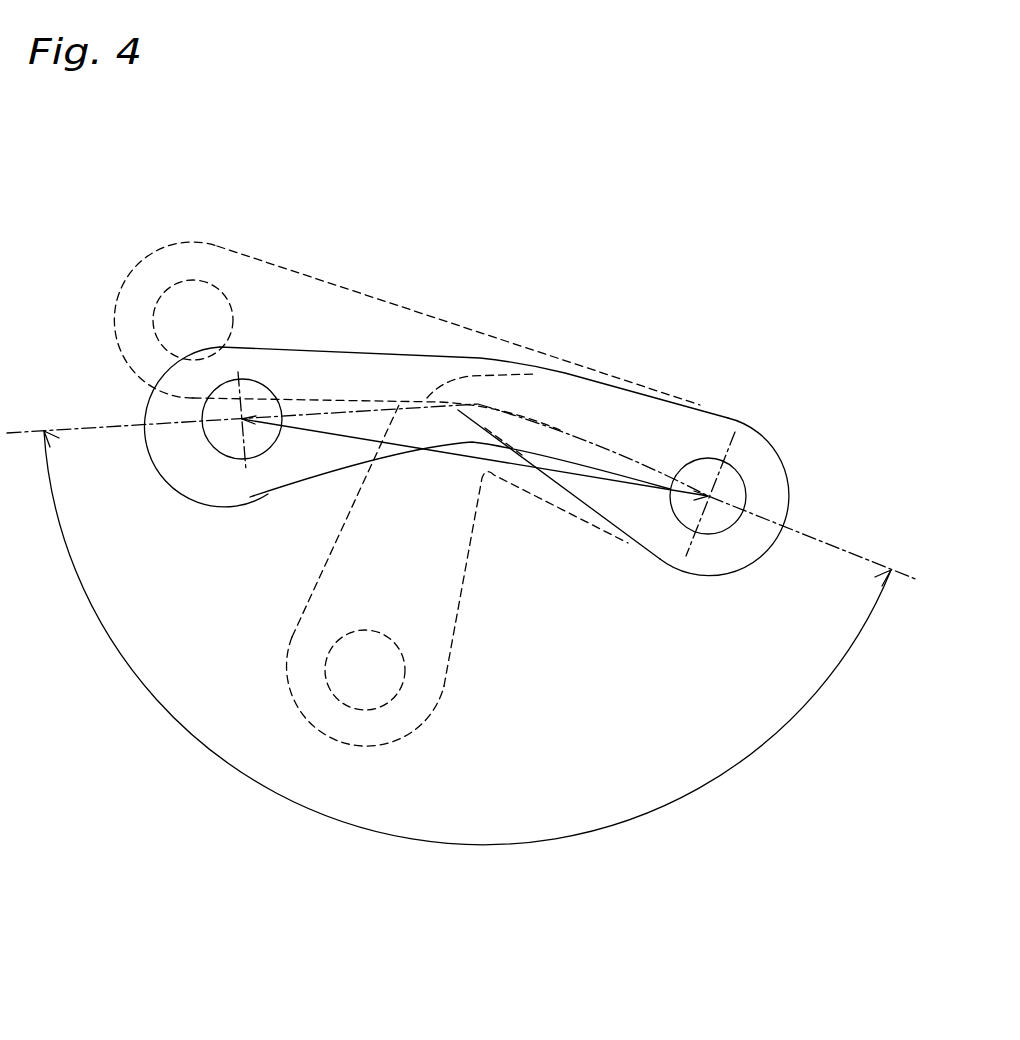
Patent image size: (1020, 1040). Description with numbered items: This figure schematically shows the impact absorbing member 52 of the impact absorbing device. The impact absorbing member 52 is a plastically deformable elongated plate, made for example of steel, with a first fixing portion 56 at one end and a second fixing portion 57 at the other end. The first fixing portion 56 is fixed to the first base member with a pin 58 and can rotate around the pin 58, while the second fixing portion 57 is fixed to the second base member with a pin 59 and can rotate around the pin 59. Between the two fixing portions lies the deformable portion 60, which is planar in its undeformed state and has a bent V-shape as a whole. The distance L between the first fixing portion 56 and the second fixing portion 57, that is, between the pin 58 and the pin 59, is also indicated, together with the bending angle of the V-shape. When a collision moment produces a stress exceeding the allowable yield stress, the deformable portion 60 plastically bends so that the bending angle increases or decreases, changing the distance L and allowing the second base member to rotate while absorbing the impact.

The impact absorbing member 52 is at (579, 375).
The first fixing portion 56 is at (780, 493).
The second fixing portion 57 is at (187, 451).
The pin 58 is at (733, 480).
The pin 59 is at (230, 443).
The deformable portion 60 is at (420, 368).
The distance L is at (637, 483).